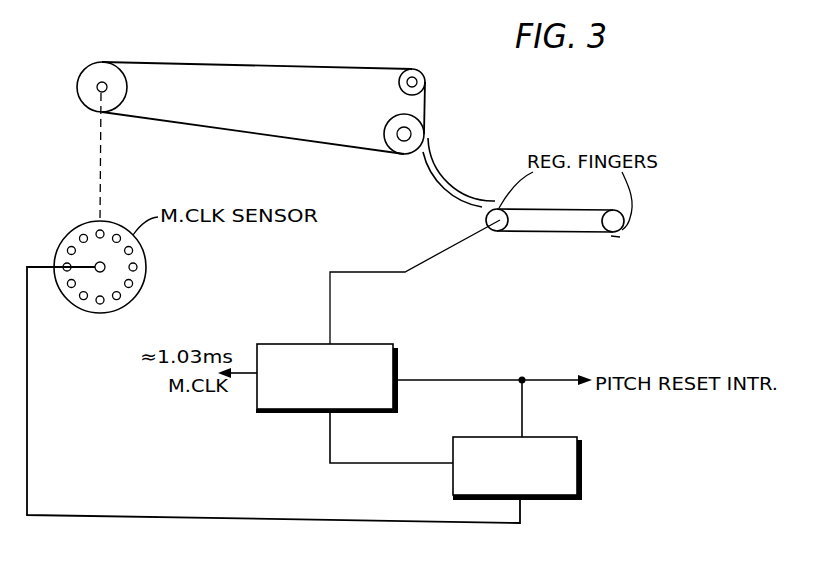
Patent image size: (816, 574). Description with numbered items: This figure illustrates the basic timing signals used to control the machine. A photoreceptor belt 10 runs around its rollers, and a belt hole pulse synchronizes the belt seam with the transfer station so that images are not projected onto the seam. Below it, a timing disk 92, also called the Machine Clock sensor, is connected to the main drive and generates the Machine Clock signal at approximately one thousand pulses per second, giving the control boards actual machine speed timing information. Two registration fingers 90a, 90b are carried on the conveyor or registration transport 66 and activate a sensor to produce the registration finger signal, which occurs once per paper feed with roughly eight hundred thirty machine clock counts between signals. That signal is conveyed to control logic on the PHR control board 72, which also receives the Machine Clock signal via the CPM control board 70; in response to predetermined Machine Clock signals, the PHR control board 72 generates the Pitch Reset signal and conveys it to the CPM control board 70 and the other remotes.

The photoreceptor belt 10 is at (180, 62).
The timing disk 92 is at (68, 232).
The registration finger 90a is at (498, 205).
The registration finger 90b is at (620, 237).
The registration transport 66 is at (569, 232).
The PHR control board 72 is at (399, 364).
The CPM control board 70 is at (584, 452).